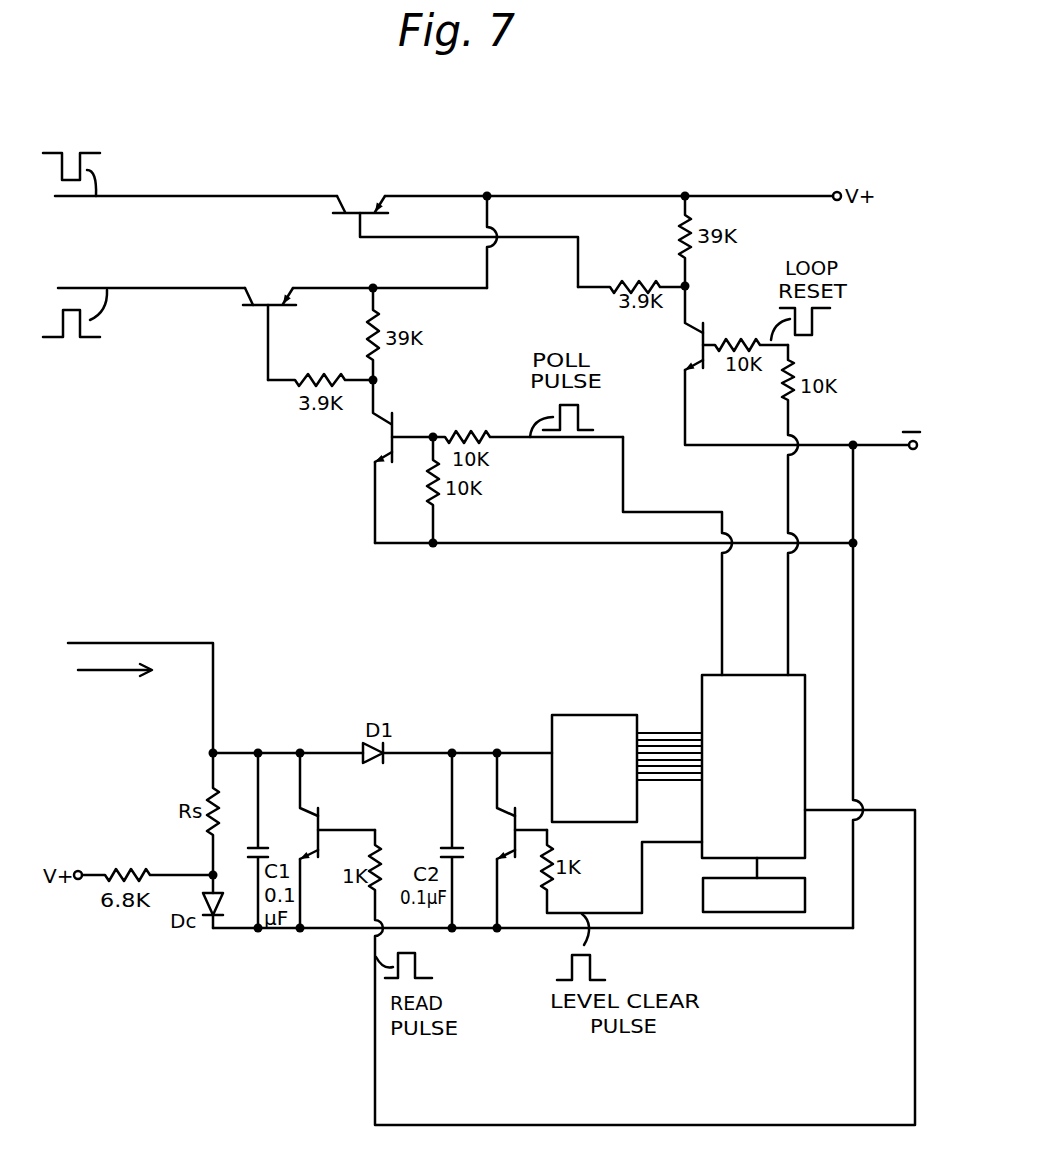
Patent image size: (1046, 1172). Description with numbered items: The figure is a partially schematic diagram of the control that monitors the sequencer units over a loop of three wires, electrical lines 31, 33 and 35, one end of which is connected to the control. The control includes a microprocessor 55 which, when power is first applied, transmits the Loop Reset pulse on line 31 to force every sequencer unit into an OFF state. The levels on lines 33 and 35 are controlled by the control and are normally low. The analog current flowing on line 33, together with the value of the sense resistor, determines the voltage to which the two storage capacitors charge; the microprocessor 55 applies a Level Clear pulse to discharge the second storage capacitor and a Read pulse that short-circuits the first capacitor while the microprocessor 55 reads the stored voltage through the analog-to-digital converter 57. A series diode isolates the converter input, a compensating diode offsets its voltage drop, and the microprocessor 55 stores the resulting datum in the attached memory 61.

The electrical line 31 is at (158, 199).
The electrical line 35 is at (175, 291).
The electrical line 33 is at (143, 643).
The microprocessor 55 is at (806, 688).
The analog-to-digital converter 57 is at (580, 715).
The memory 61 is at (806, 898).